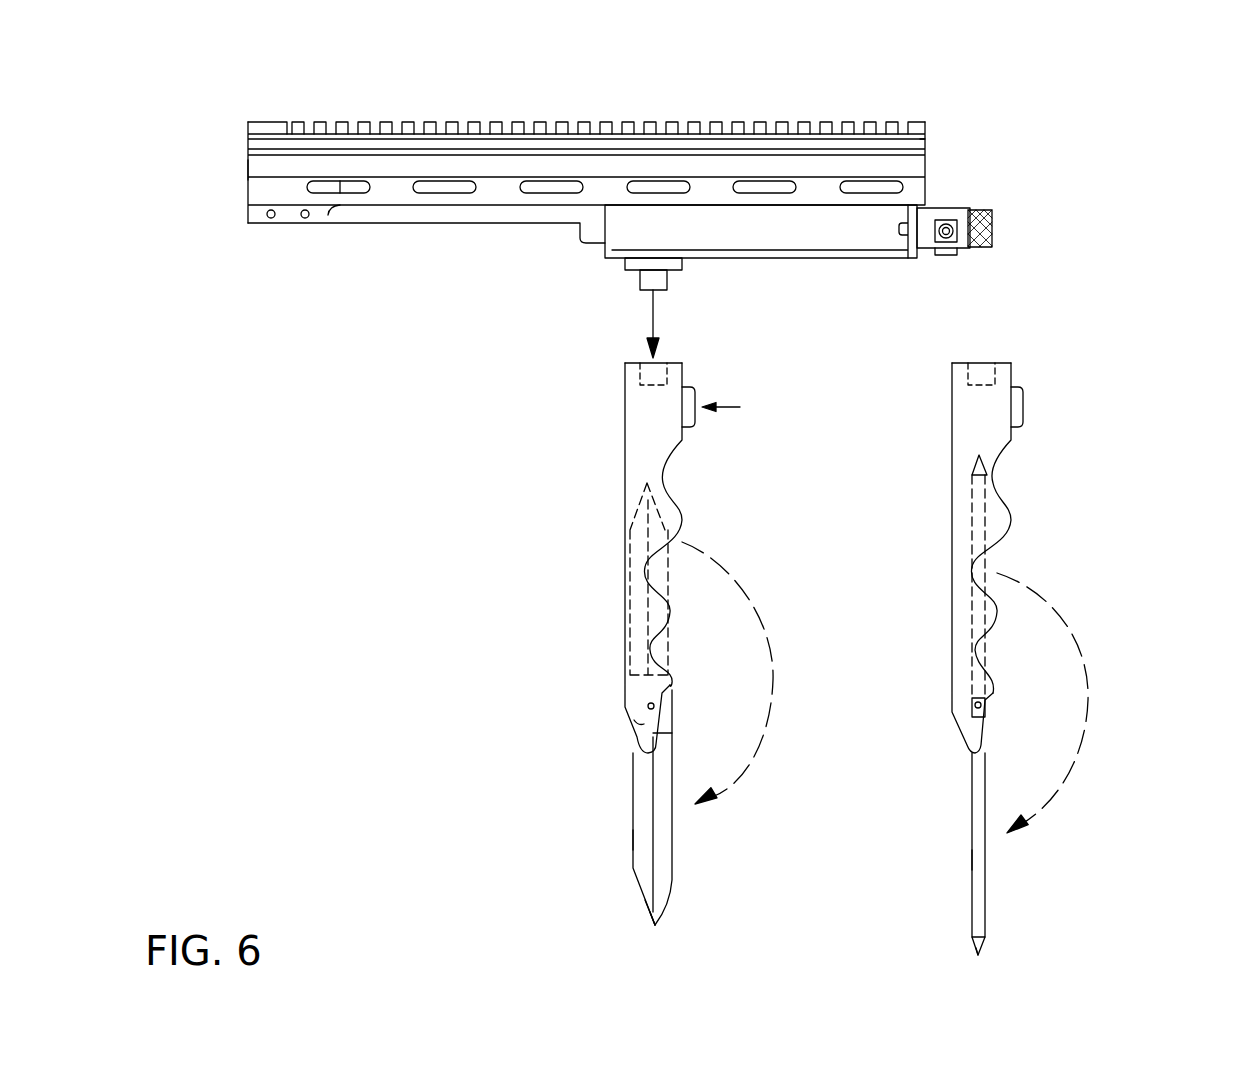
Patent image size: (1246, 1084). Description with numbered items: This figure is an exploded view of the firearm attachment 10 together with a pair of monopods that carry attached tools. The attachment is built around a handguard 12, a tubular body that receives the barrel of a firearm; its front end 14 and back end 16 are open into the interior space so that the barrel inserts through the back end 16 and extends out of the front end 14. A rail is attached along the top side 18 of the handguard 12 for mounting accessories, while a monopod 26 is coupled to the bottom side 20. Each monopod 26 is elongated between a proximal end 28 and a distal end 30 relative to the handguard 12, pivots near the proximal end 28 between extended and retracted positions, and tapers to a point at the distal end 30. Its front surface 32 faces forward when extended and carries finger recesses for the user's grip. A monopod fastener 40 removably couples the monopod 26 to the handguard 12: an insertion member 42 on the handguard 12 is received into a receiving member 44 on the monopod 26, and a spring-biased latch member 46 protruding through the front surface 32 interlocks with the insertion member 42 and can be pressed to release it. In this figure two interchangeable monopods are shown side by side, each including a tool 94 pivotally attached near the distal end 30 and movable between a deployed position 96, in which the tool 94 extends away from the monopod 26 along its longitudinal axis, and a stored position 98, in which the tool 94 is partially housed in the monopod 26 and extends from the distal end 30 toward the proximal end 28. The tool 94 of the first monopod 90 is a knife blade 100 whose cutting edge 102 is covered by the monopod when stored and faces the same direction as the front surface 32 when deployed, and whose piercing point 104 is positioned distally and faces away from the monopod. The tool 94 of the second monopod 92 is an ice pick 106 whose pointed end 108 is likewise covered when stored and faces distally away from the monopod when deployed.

The firearm attachment 10 is at (1112, 165).
The handguard 12 is at (492, 187).
The front end 14 is at (925, 158).
The back end 16 is at (248, 167).
The top side 18 is at (472, 138).
The bottom side 20 is at (380, 225).
The monopod 26 is at (638, 462).
The proximal end 28 is at (633, 390).
The distal end 30 is at (640, 727).
The front surface 32 is at (683, 521).
The monopod fastener 40 is at (725, 277).
The insertion member 42 is at (667, 281).
The receiving member 44 is at (625, 368).
The latch member 46 is at (688, 414).
The first monopod 90 is at (568, 598).
The second monopod 92 is at (912, 589).
The tool 94 is at (609, 933).
The deployed position 96 is at (600, 842).
The stored position 98 is at (690, 630).
The knife blade 100 is at (642, 796).
The cutting edge 102 is at (672, 835).
The piercing point 104 is at (655, 925).
The ice pick 106 is at (985, 870).
The pointed end 108 is at (978, 955).